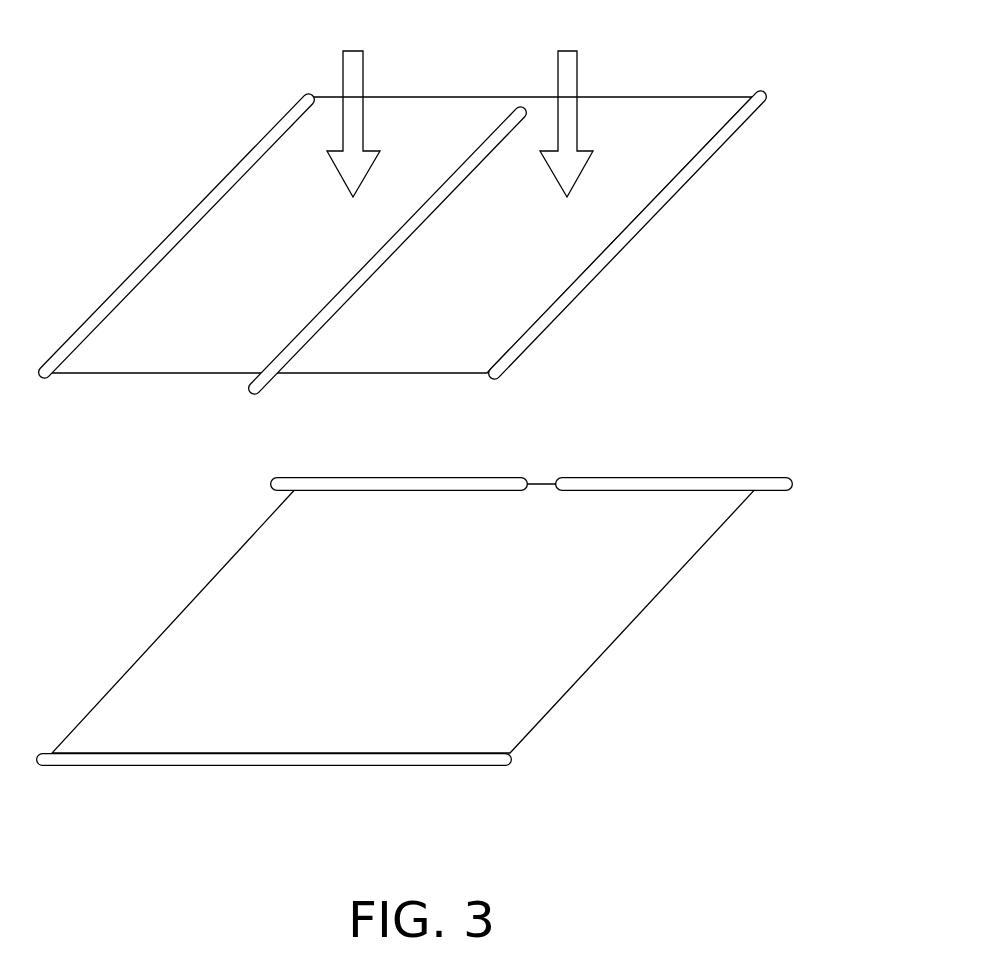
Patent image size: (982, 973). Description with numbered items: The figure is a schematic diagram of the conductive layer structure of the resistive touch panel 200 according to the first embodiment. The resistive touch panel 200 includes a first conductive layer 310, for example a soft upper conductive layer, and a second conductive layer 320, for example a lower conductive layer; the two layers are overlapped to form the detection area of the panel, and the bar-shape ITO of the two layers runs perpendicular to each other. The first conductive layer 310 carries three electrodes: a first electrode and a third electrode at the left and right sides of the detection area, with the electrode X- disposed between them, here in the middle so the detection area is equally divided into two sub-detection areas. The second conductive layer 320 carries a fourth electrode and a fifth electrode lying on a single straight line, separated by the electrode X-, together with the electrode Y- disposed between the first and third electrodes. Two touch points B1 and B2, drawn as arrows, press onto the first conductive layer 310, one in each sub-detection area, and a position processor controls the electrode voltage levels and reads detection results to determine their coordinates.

The resistive touch panel 200 is at (463, 417).
The first conductive layer 310 is at (401, 273).
The second conductive layer 320 is at (464, 644).
The second electrode X- is at (253, 392).
The sixth electrode Y- is at (275, 760).
The touch point B1 is at (353, 103).
The touch point B2 is at (566, 103).